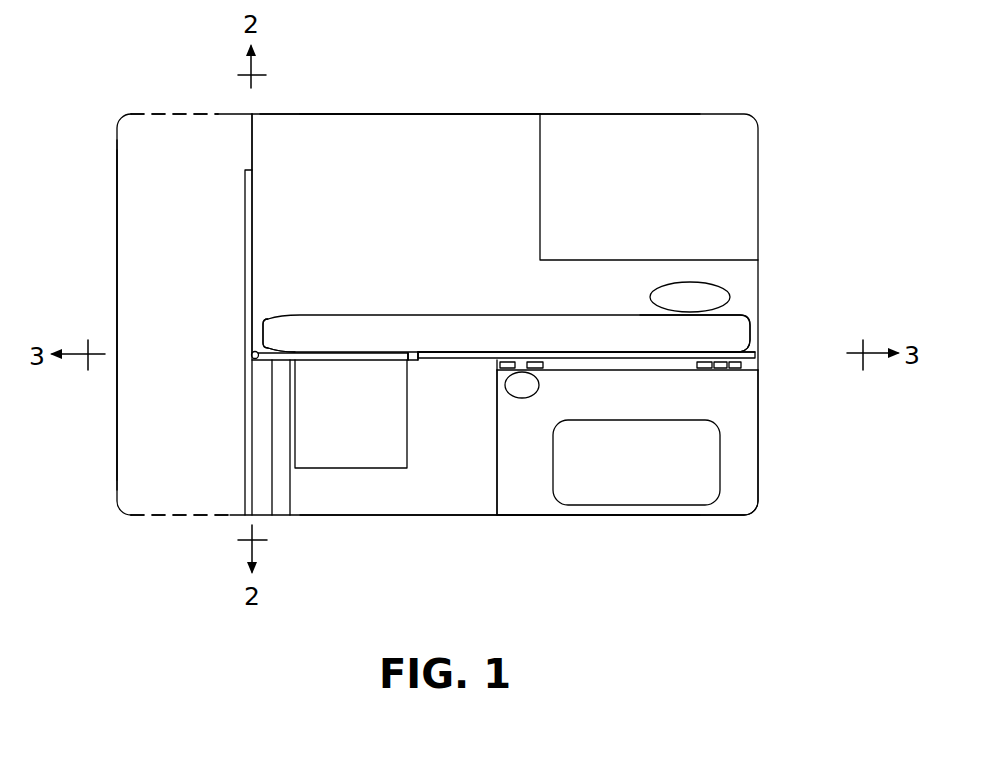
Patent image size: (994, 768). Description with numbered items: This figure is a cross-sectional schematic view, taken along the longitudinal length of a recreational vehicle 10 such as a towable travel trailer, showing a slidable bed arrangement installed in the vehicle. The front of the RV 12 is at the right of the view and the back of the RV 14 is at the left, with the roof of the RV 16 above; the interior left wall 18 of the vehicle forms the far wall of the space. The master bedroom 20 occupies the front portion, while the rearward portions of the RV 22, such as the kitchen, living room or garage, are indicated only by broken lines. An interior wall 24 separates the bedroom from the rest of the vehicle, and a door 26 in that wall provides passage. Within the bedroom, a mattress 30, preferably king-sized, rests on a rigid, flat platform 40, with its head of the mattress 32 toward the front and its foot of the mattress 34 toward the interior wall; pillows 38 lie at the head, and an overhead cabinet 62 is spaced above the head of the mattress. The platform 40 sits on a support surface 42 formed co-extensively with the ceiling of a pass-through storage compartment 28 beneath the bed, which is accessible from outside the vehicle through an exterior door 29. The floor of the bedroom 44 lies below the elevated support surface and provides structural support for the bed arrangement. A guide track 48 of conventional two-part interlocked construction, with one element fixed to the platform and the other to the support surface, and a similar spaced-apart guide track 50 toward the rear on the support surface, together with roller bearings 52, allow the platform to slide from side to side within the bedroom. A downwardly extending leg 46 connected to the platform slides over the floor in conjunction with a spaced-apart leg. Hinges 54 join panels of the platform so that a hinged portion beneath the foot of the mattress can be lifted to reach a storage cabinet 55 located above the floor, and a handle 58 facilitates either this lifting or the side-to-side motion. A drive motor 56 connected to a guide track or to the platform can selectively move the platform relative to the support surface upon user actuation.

The recreational vehicle 10 is at (778, 112).
The front of the RV 12 is at (758, 210).
The back of the RV 14 is at (117, 213).
The roof of the RV 16 is at (465, 113).
The interior left wall 18 is at (420, 143).
The master bedroom 20 is at (352, 156).
The rearward portions of the RV 22 is at (148, 172).
The interior wall 24 is at (252, 140).
The door 26 is at (245, 260).
The pass-through storage compartment 28 is at (730, 395).
The exterior door 29 is at (720, 470).
The mattress 30 is at (485, 328).
The head of the mattress 32 is at (720, 330).
The foot of the mattress 34 is at (313, 328).
The pillows 38 is at (690, 297).
The platform 40 is at (455, 355).
The support surface 42 is at (607, 366).
The floor of the bedroom 44 is at (400, 515).
The downwardly extending leg 46 is at (280, 425).
The guide track 48 is at (710, 363).
The guide track 50 is at (500, 363).
The roller bearings 52 is at (553, 365).
The hinges 54 is at (410, 357).
The storage cabinet 55 is at (370, 470).
The drive motor 56 is at (522, 384).
The handle 58 is at (252, 360).
The overhead cabinet 62 is at (622, 160).